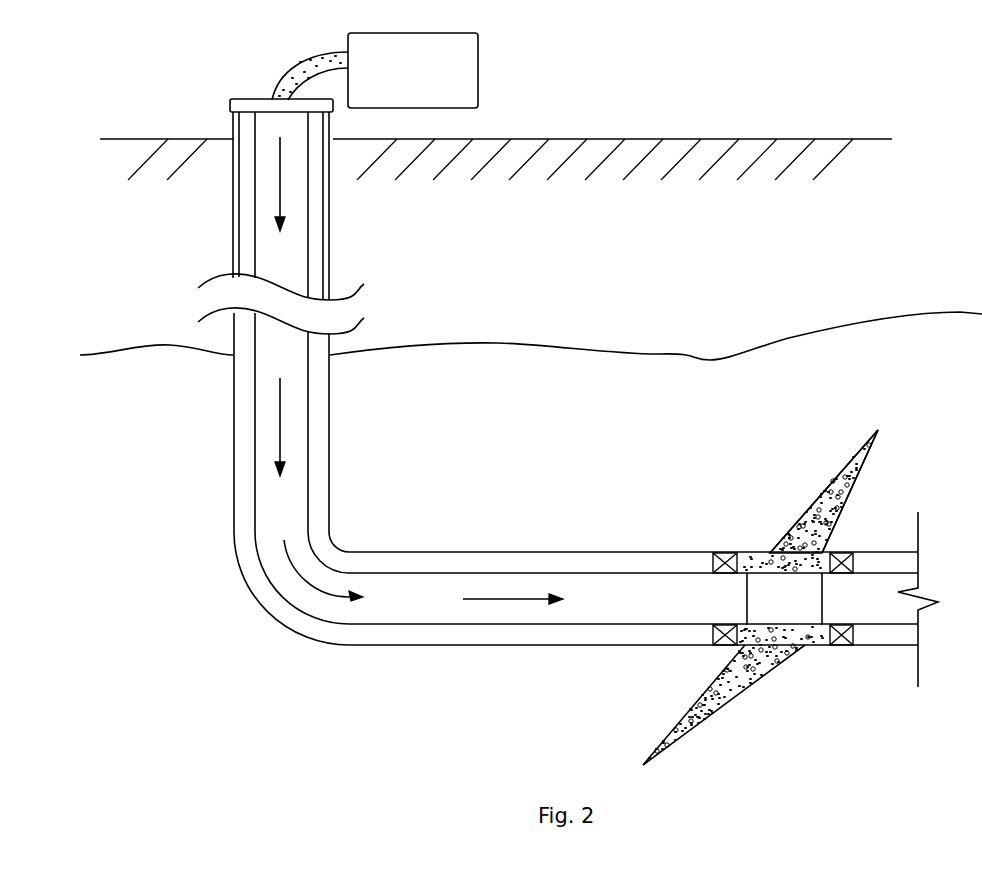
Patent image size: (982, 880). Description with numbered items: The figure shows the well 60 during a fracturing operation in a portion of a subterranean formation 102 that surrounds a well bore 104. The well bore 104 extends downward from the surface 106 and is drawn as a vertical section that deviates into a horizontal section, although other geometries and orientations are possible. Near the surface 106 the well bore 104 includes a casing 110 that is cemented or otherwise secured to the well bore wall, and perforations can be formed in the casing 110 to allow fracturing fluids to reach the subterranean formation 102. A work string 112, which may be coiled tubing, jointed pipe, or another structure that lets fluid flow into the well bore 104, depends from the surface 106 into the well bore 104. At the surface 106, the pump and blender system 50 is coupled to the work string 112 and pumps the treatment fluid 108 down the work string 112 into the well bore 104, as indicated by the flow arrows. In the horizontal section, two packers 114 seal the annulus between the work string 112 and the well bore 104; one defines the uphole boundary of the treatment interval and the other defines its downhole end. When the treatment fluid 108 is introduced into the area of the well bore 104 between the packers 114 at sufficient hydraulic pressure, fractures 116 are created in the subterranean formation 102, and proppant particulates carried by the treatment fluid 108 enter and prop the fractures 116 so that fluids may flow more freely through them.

The pump and blender system 50 is at (413, 86).
The well 60 is at (248, 631).
The subterranean formation 102 is at (560, 388).
The well bore 104 is at (243, 230).
The surface 106 is at (685, 139).
The treatment fluid 108 is at (289, 73).
The casing 110 is at (238, 265).
The work string 112 is at (255, 470).
The packers 114 is at (727, 551).
The fractures 116 is at (809, 499).